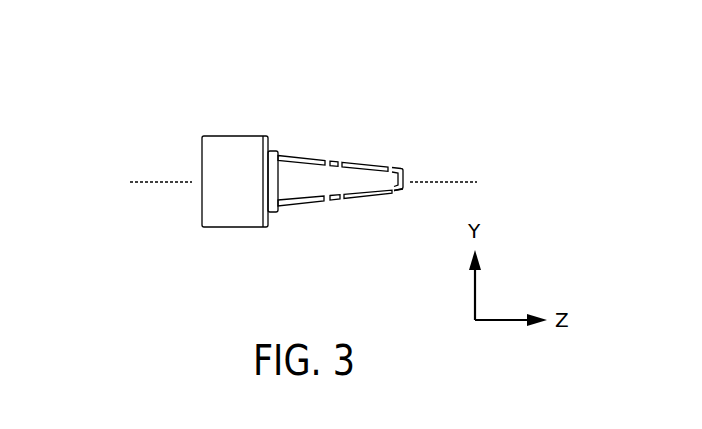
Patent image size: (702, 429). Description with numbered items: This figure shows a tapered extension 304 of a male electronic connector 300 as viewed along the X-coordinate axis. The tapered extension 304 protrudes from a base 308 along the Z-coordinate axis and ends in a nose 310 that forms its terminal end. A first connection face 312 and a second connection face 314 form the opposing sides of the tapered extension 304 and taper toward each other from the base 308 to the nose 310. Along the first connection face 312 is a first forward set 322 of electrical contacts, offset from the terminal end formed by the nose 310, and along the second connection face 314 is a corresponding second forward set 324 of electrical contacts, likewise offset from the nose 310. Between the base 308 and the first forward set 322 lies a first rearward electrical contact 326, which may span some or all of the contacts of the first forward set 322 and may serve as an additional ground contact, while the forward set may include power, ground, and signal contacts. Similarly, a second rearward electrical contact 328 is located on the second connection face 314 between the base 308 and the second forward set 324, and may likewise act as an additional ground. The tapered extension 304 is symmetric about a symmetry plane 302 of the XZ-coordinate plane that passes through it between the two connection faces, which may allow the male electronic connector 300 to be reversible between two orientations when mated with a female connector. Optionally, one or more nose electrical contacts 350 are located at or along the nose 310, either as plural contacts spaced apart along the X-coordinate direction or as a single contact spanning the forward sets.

The male electronic connector 300 is at (439, 58).
The symmetry plane 302 is at (301, 182).
The tapered extension 304 is at (357, 187).
The base 308 is at (224, 136).
The nose 310 is at (404, 189).
The first connection face 312 is at (335, 160).
The second connection face 314 is at (337, 202).
The first forward set of electrical contacts 322 is at (380, 166).
The second forward set of electrical contacts 324 is at (367, 197).
The first rearward electrical contact 326 is at (318, 156).
The second rearward electrical contact 328 is at (313, 207).
The nose electrical contacts 350 is at (404, 171).